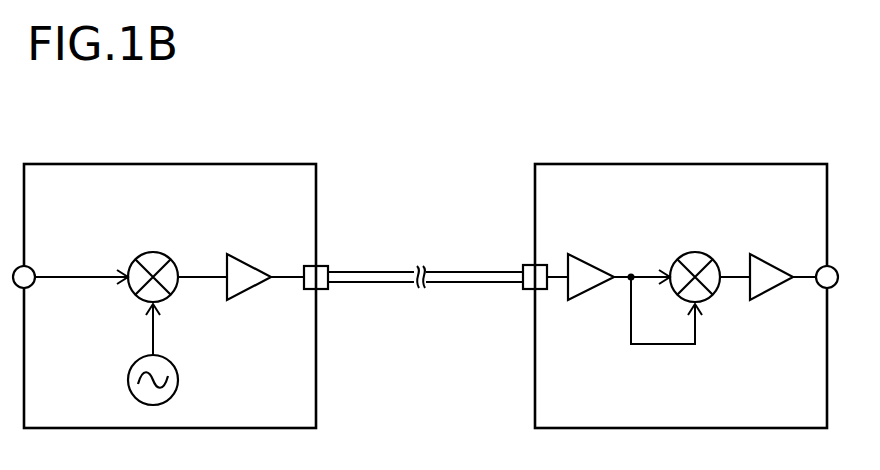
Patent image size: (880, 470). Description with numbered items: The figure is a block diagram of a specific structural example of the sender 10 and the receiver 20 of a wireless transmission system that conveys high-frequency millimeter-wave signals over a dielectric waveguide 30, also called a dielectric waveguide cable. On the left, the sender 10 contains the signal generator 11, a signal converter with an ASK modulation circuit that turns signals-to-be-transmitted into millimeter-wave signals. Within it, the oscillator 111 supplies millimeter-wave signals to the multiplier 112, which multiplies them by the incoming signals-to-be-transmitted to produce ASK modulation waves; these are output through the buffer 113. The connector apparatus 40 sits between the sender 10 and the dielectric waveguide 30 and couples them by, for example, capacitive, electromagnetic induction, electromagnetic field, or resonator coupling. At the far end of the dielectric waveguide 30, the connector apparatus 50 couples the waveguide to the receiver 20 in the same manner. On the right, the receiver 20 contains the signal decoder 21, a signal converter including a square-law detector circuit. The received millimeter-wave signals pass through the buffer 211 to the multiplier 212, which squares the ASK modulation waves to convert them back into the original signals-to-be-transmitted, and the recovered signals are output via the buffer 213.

The sender 10 is at (178, 166).
The receiver 20 is at (678, 170).
The signal generator 11 is at (95, 236).
The oscillator 111 is at (178, 380).
The multiplier 112 is at (153, 262).
The buffer 113 is at (238, 294).
The connector apparatus 40 is at (326, 266).
The dielectric waveguide 30 is at (437, 284).
The connector apparatus 50 is at (523, 268).
The signal decoder 21 is at (597, 362).
The buffer 211 is at (591, 268).
The multiplier 212 is at (697, 260).
The buffer 213 is at (776, 268).